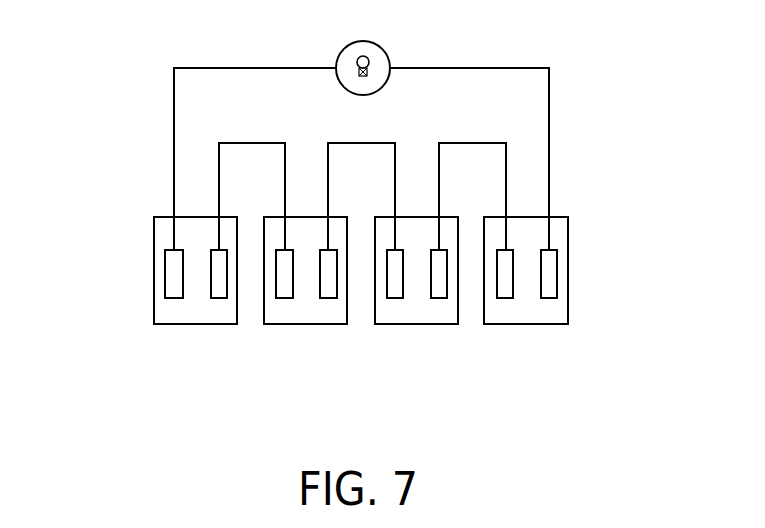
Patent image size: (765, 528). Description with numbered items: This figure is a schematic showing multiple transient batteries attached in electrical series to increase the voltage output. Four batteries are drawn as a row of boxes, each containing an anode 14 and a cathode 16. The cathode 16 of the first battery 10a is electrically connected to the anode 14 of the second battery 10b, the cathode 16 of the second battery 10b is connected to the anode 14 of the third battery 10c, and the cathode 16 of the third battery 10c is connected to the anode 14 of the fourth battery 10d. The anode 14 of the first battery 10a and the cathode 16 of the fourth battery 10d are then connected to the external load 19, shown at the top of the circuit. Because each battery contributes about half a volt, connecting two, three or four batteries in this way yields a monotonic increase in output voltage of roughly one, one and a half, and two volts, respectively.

The external load 19 is at (370, 63).
The first battery 10a is at (153, 241).
The second battery 10b is at (271, 311).
The third battery 10c is at (383, 311).
The fourth battery 10d is at (568, 228).
The anode 14 is at (174, 298).
The cathode 16 is at (219, 298).